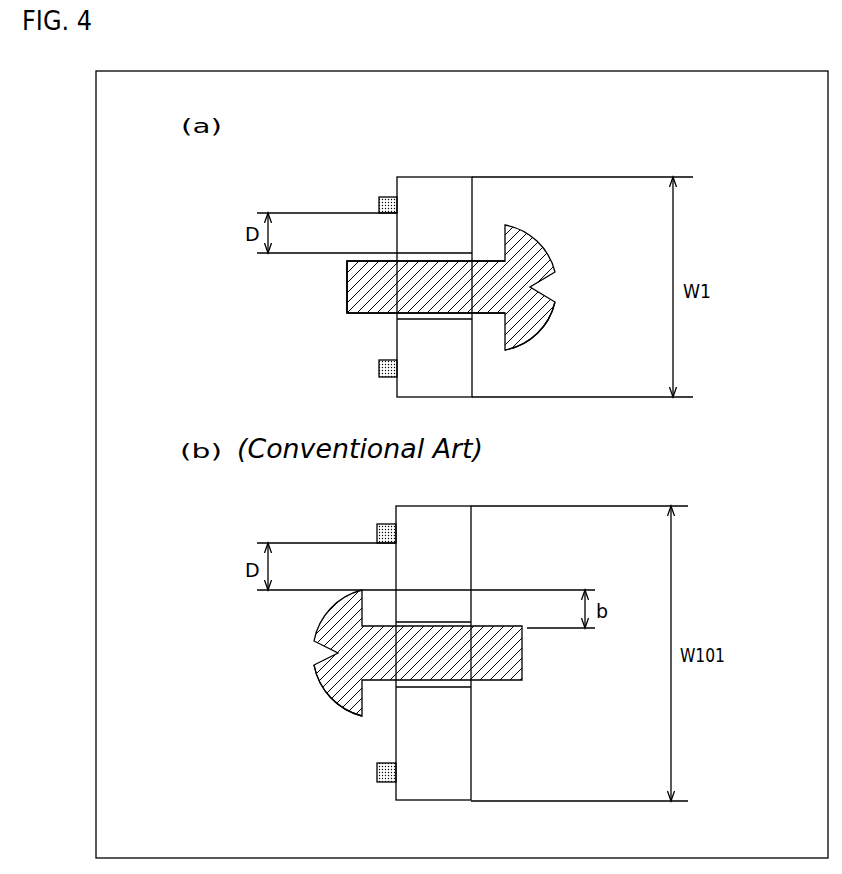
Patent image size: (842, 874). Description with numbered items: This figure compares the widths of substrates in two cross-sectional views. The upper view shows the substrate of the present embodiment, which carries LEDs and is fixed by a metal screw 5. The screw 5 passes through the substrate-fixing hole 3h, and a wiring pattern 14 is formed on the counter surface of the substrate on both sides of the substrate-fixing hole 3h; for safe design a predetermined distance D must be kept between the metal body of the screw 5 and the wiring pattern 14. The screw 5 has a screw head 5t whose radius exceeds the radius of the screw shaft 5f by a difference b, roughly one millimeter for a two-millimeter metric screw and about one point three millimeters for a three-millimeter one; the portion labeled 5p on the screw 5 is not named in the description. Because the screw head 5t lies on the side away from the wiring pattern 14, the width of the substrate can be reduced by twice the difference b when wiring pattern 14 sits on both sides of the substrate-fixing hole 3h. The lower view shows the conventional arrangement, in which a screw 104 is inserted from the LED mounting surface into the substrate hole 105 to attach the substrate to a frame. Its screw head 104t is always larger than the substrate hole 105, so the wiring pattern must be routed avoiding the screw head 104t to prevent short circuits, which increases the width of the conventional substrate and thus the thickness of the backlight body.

The wiring pattern 14 is at (379, 204).
The screw 5 is at (566, 272).
The pin shaft portion 5p is at (347, 283).
The screw shaft 5f is at (366, 316).
The screw head 5t is at (553, 312).
The substrate-fixing hole 3h is at (475, 318).
The screw 104 is at (306, 647).
The screw head 104t is at (325, 690).
The substrate hole 105 is at (471, 684).